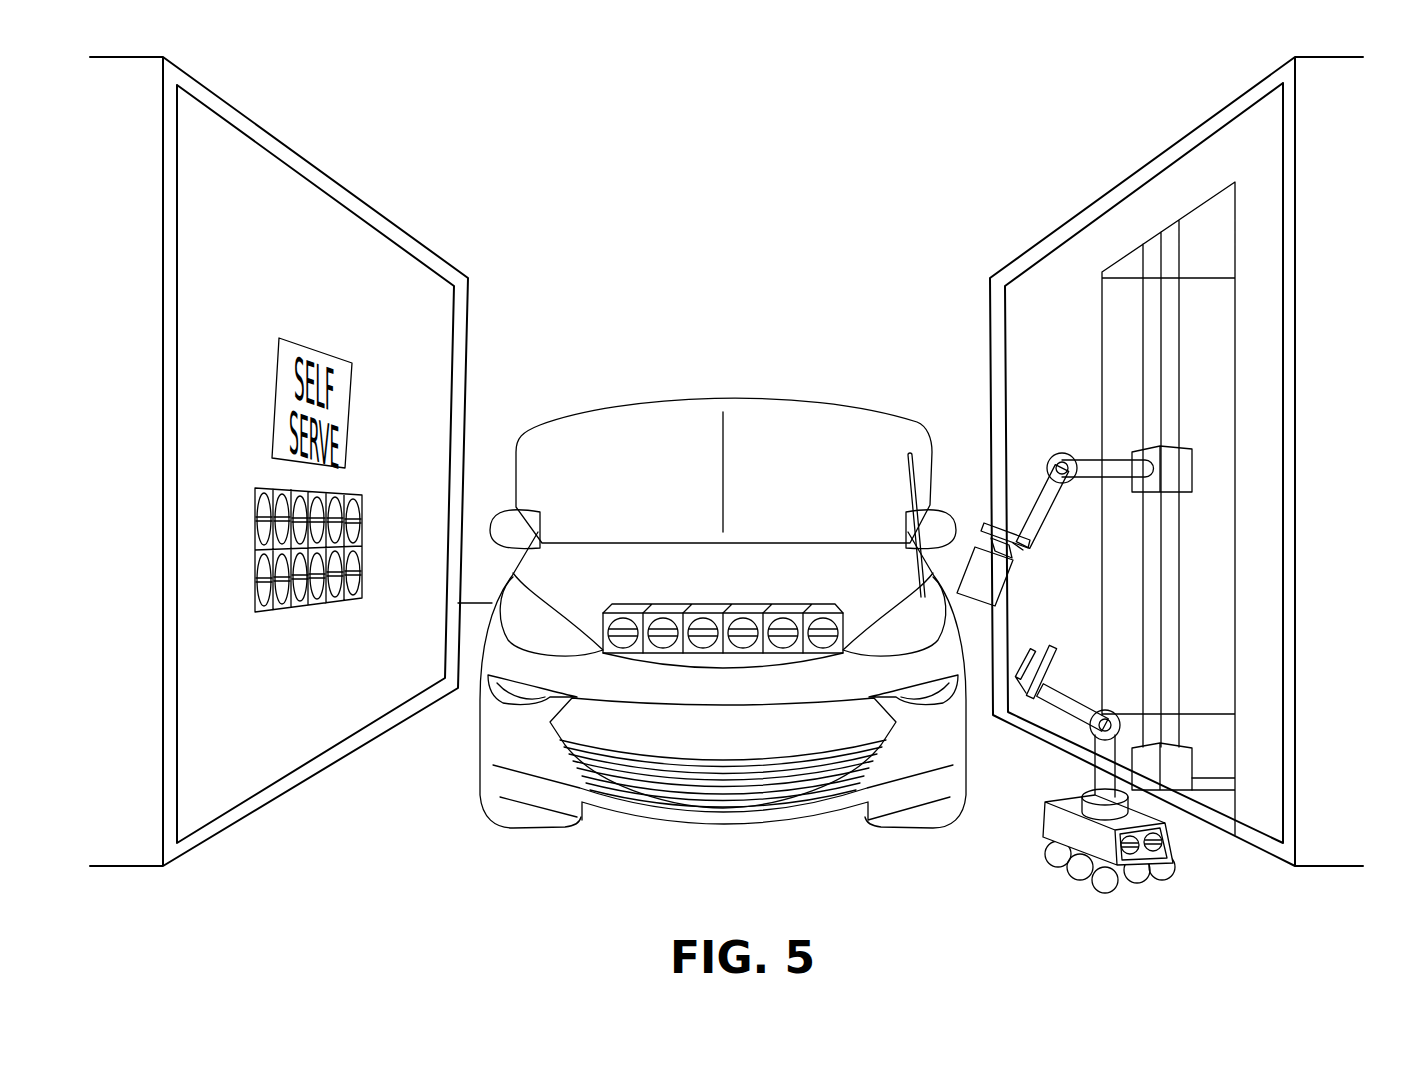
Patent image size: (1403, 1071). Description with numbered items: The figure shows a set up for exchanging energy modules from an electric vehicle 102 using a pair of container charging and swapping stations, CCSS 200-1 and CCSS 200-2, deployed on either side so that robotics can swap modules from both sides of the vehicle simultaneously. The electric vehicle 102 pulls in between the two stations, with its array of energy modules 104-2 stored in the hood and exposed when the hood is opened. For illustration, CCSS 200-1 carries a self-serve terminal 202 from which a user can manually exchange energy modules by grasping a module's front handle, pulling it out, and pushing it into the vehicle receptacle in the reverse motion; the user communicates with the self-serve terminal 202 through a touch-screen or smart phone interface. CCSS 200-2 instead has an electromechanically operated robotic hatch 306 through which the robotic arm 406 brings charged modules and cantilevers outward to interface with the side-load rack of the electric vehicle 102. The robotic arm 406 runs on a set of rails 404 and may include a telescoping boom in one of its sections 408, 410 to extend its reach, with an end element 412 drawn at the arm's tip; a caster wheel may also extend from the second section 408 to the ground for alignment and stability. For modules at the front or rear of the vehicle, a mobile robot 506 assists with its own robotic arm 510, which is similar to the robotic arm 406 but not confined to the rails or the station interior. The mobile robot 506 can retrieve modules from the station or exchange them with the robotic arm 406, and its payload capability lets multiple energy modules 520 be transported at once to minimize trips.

The electric vehicle 102 is at (710, 395).
The array of energy modules 104-2 is at (717, 605).
The CCSS 200-1 is at (407, 224).
The CCSS 200-2 is at (1040, 238).
The self-serve terminal 202 is at (262, 486).
The robotic hatch 306 is at (1102, 328).
The set of rails 404 is at (1210, 778).
The robotic arm 406 is at (1210, 462).
The second section of the robotic arm 408 is at (1043, 530).
The section of the robotic arm 410 is at (1097, 455).
The gripper / end effector 412 is at (1017, 565).
The mobile robot 506 is at (1126, 802).
The robotic arm 510 is at (1058, 740).
The energy modules 520 is at (1167, 840).